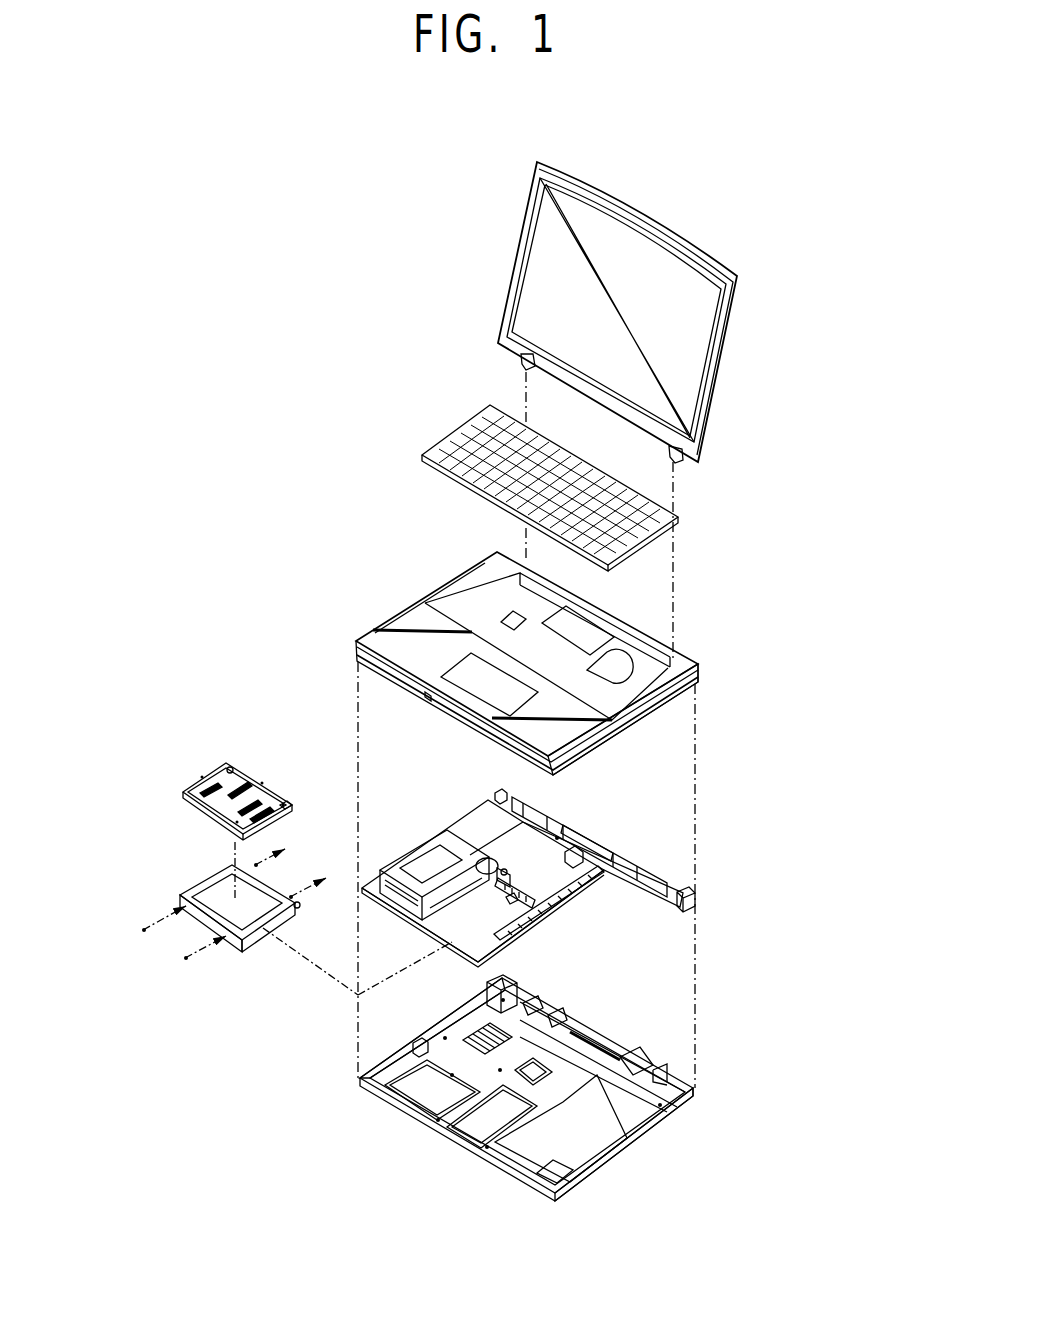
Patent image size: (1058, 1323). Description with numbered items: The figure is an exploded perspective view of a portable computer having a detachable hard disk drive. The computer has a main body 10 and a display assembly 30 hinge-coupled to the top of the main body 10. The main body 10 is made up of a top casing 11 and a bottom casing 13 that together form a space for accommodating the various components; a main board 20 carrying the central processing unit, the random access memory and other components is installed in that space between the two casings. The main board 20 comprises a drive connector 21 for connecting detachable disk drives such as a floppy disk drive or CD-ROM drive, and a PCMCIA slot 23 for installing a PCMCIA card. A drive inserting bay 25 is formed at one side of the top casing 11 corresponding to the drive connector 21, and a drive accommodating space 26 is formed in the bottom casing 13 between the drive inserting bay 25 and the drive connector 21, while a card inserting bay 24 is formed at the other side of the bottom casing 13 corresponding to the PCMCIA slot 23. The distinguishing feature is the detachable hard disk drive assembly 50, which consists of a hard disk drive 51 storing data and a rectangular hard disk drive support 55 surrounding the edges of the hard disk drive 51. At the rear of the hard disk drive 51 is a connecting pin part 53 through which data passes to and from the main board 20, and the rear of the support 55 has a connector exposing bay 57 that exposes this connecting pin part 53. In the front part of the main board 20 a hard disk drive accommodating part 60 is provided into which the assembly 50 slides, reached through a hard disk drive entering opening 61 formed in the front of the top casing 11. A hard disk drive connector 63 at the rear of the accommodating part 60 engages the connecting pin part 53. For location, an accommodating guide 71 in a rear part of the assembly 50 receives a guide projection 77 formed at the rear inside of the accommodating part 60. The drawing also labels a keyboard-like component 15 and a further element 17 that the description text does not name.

The main body 10 is at (596, 876).
The top casing 11 is at (588, 669).
The bottom casing 13 is at (567, 1088).
The keyboard 15 is at (675, 516).
The touch pad 17 is at (460, 674).
The main board 20 is at (593, 893).
The drive connector 21 is at (595, 873).
The PCMCIA slot 23 is at (410, 867).
The card inserting bay 24 is at (383, 1062).
The drive inserting bay 25 is at (648, 705).
The drive accommodating space 26 is at (628, 1120).
The display assembly 30 is at (682, 227).
The hard disk drive assembly 50 is at (245, 892).
The hard disk drive 51 is at (197, 781).
The connecting pin part 53 is at (284, 826).
The hard disk drive support 55 is at (182, 902).
The connector exposing bay 57 is at (260, 935).
The hard disk drive accommodating part 60 is at (483, 930).
The hard disk drive entering opening 61 is at (428, 700).
The hard disk drive connector 63 is at (514, 900).
The accommodating guide 71 is at (310, 917).
The guide projection 77 is at (522, 885).